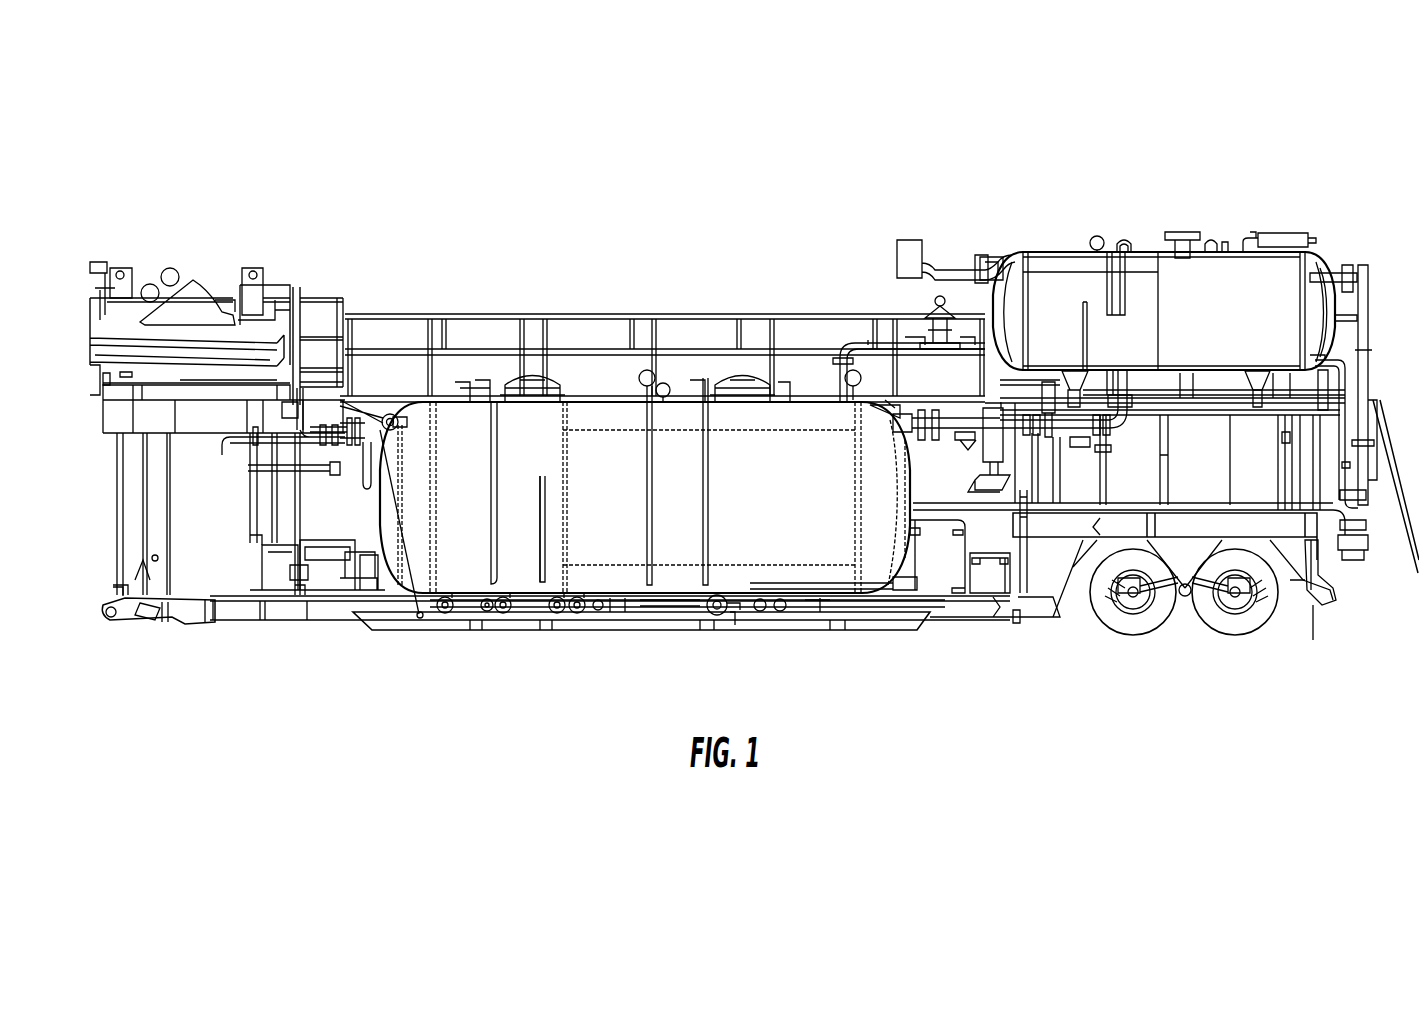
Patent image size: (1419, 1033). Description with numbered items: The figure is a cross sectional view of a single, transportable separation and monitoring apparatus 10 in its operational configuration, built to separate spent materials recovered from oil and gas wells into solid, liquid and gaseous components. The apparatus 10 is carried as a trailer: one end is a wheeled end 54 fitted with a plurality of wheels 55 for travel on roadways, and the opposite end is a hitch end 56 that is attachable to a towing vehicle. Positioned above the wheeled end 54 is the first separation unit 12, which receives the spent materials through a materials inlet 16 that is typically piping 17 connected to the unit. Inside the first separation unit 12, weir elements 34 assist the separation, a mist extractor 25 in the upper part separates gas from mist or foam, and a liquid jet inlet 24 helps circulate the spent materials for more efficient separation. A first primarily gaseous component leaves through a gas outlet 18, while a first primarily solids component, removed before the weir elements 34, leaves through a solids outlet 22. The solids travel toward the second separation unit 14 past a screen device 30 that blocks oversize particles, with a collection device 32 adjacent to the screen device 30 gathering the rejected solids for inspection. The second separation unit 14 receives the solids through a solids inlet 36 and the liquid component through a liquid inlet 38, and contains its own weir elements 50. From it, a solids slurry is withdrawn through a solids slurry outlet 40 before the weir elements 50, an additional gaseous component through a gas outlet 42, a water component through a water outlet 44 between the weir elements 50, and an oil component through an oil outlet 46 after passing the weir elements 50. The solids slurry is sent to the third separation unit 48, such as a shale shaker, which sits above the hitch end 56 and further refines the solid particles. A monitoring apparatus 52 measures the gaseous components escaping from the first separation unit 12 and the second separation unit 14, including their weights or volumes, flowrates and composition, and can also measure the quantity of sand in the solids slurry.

The separation and monitoring apparatus 10 is at (1164, 170).
The first separation unit 12 is at (1056, 258).
The second separation unit 14 is at (491, 467).
The materials inlet 16 is at (1319, 275).
The piping 17 is at (1363, 300).
The gas outlet 18 is at (1003, 258).
The solids outlet 22 is at (1118, 362).
The liquid jet inlet 24 is at (1347, 363).
The mist extractor 25 is at (1128, 293).
The screen device 30 is at (962, 435).
The collection device 32 is at (1002, 448).
The weir elements 34 is at (1080, 333).
The solids inlet 36 is at (892, 426).
The liquid inlet 38 is at (843, 402).
The solids slurry outlet 40 is at (718, 614).
The gas outlet 42 is at (398, 415).
The water outlet 44 is at (578, 615).
The oil outlet 46 is at (504, 617).
The third separation unit 48 is at (212, 275).
The weir elements 50 is at (540, 505).
The monitoring apparatus 52 is at (906, 240).
The wheeled end 54 is at (1322, 558).
The wheels 55 is at (1136, 625).
The hitch end 56 is at (120, 623).